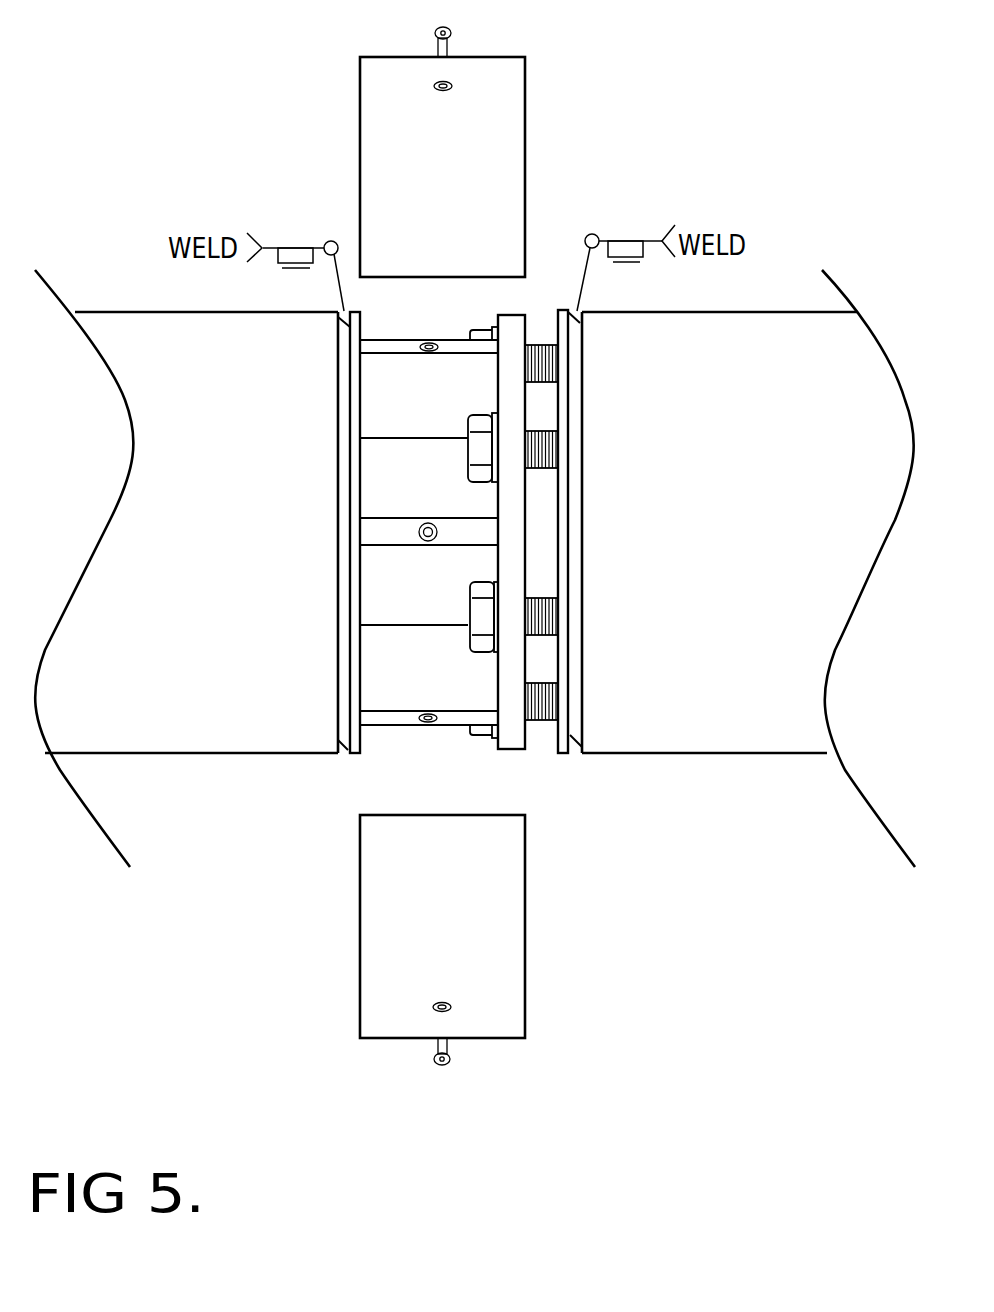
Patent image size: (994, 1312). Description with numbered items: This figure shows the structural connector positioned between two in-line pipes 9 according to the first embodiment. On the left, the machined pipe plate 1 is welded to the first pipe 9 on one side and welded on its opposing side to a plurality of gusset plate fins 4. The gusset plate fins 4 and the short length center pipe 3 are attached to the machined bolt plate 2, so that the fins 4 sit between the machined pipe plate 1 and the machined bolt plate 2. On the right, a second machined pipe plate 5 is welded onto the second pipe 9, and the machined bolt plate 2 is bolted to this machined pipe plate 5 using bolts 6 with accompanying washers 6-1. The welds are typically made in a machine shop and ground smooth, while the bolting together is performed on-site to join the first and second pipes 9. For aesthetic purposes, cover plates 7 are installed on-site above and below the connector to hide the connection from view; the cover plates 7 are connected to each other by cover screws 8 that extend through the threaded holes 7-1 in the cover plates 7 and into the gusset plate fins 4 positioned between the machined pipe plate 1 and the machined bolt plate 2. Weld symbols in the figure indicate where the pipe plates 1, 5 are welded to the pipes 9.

The machined pipe plate 1 is at (327, 561).
The machined bolt plate 2 is at (531, 557).
The center pipe 3 is at (429, 567).
The gusset plate fins 4 is at (413, 415).
The machined pipe plate 5 is at (593, 563).
The bolts 6 is at (474, 515).
The washers 6-1 is at (496, 593).
The cover plates 7 is at (462, 546).
The threaded holes 7-1 is at (340, 547).
The cover screws 8 is at (414, 551).
The pipe 9 is at (217, 517).